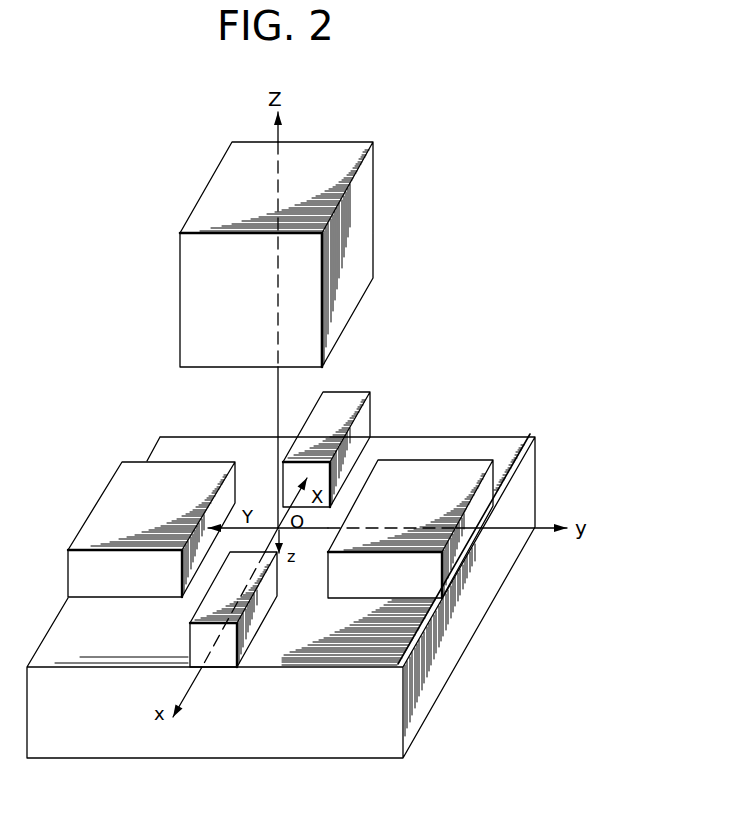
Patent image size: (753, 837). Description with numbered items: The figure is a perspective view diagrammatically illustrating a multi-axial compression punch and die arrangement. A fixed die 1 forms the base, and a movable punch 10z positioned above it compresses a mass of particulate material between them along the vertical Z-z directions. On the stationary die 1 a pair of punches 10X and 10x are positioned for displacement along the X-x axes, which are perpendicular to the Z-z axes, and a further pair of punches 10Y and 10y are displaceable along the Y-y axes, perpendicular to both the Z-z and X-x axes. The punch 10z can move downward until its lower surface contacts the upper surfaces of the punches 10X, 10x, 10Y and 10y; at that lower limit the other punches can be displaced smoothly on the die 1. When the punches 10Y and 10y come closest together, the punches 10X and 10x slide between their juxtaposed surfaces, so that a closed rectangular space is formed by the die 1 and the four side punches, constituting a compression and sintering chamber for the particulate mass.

The fixed die 1 is at (300, 743).
The movable punch 10z is at (368, 248).
The punch 10x is at (350, 397).
The punch 10y is at (212, 470).
The punch 10Y is at (448, 470).
The punch 10X is at (258, 624).